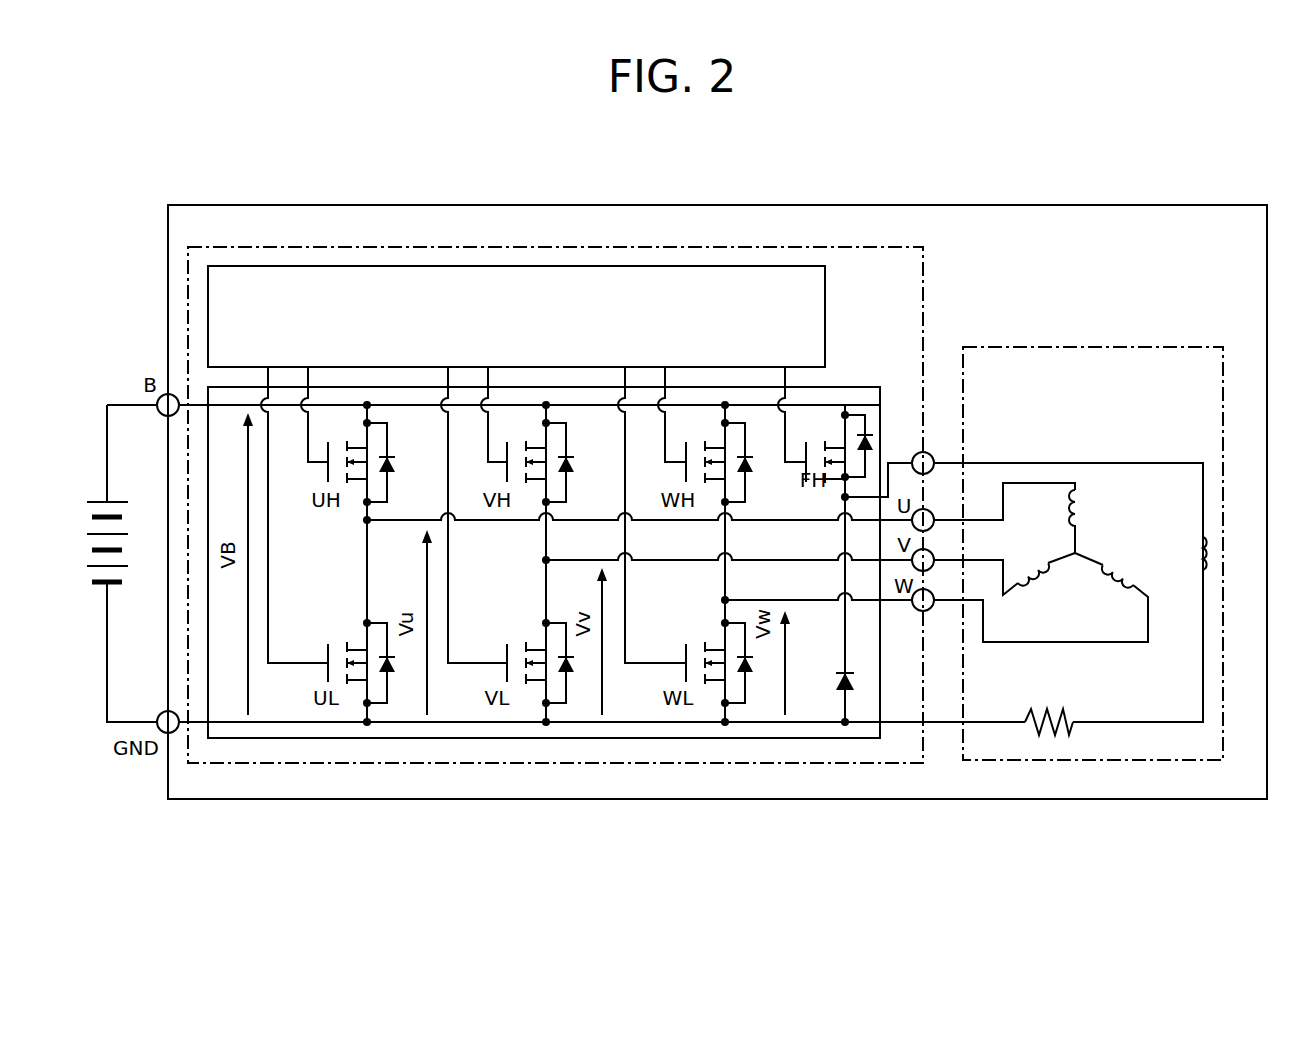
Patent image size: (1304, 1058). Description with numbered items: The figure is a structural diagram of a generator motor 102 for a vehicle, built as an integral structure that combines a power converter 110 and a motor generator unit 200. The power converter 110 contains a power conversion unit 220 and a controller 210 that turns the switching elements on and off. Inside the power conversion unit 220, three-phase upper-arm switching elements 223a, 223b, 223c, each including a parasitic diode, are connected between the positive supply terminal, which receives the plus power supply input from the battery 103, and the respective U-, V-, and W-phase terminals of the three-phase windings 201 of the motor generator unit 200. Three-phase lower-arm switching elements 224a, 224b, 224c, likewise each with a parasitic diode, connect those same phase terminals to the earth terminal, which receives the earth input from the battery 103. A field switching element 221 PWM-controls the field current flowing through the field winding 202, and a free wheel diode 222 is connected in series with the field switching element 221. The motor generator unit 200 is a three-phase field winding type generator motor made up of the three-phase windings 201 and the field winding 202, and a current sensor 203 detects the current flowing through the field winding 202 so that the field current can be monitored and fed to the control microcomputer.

The generator motor 102 is at (1065, 204).
The power converter 110 is at (202, 246).
The power conversion unit 220 is at (228, 740).
The controller 210 is at (430, 265).
The three-phase upper-arm switching element 223a is at (362, 442).
The three-phase upper-arm switching element 223b is at (532, 442).
The three-phase upper-arm switching element 223c is at (712, 442).
The field switching element 221 is at (833, 422).
The three-phase lower-arm switching element 224a is at (352, 683).
The three-phase lower-arm switching element 224b is at (532, 683).
The three-phase lower-arm switching element 224c is at (712, 683).
The free wheel diode 222 is at (832, 692).
The battery 103 is at (90, 518).
The motor generator unit 200 is at (1198, 346).
The three-phase windings 201 is at (1081, 496).
The field winding 202 is at (1196, 538).
The current sensor 203 is at (1030, 737).